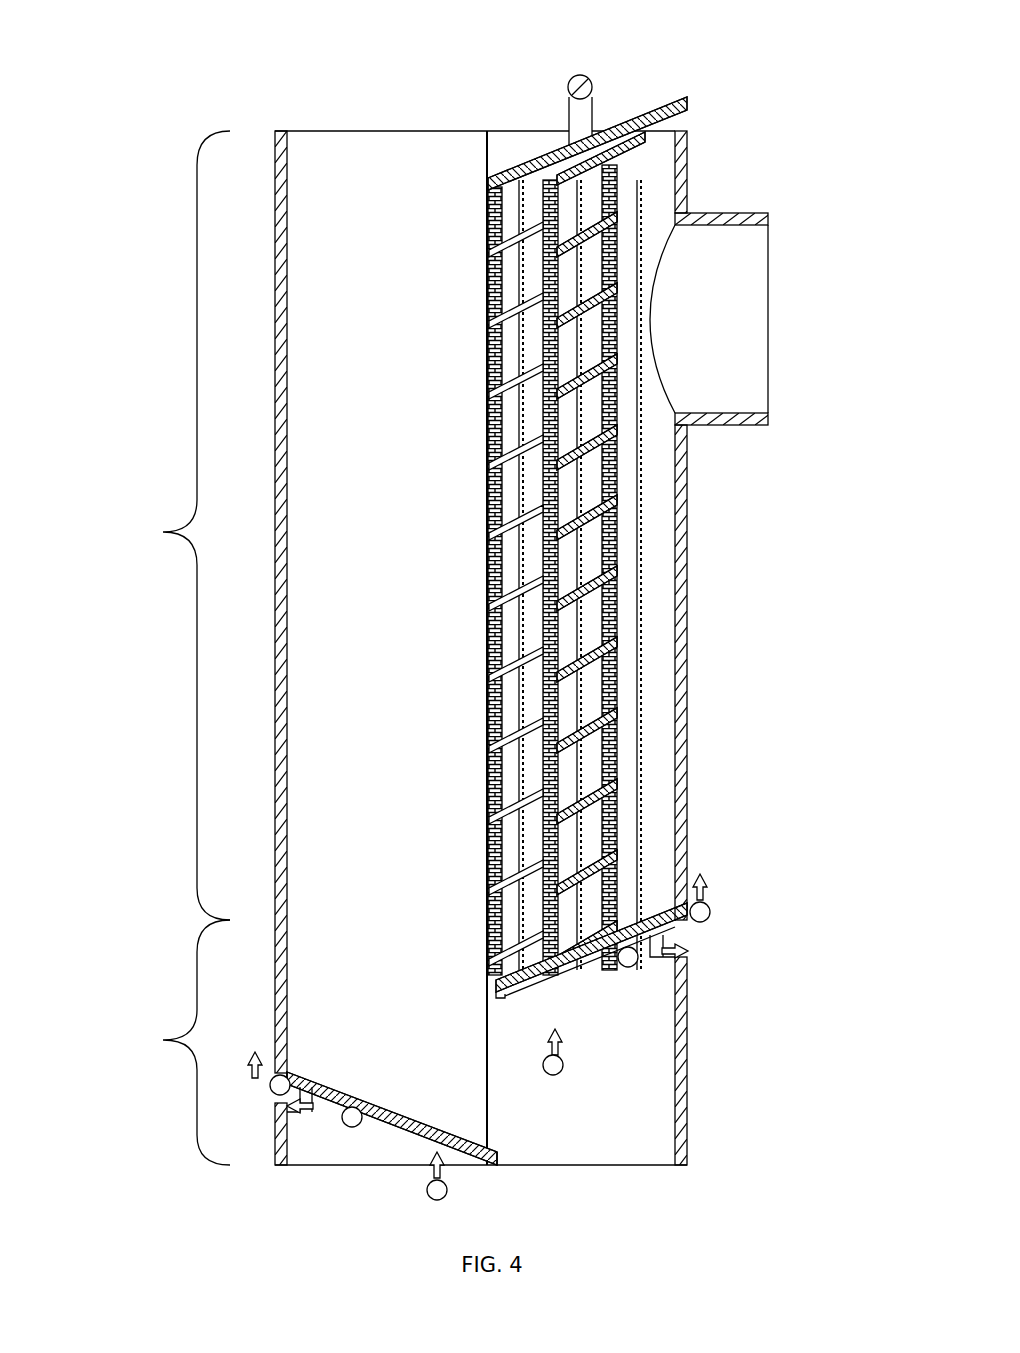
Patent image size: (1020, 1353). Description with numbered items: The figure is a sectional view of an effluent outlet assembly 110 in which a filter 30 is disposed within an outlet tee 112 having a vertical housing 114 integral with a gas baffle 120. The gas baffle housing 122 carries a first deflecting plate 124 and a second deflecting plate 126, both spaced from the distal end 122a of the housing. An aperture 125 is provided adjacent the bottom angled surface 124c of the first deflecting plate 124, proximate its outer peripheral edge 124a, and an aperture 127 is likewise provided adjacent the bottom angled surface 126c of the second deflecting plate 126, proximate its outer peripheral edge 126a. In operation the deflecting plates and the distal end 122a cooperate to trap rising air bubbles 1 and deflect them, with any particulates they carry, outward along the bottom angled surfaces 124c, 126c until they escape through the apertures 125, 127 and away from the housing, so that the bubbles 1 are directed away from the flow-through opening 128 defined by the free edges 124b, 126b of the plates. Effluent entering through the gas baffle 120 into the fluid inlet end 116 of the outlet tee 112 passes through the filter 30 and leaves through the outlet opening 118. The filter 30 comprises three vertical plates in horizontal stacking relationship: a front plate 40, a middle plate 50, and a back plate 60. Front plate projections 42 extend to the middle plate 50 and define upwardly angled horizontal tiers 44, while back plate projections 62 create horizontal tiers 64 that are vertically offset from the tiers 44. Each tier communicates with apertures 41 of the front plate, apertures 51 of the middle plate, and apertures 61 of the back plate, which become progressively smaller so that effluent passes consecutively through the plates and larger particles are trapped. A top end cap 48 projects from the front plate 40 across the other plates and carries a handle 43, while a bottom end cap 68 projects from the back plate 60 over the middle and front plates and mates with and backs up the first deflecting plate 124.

The air bubbles 1 is at (712, 913).
The filter 30 is at (667, 92).
The front plate 40 is at (432, 536).
The apertures of front plate 41 is at (497, 628).
The front plate projections 42 is at (497, 242).
The handle 43 is at (575, 76).
The horizontal tier 44 is at (468, 287).
The top end cap 48 is at (530, 165).
The middle plate 50 is at (502, 528).
The apertures of middle plate 51 is at (553, 700).
The back plate 60 is at (656, 509).
The apertures of back plate 61 is at (640, 660).
The back plate projections 62 is at (604, 235).
The horizontal tier 64 is at (588, 270).
The bottom end cap 68 is at (652, 902).
The effluent outlet assembly 110 is at (137, 147).
The outlet tee 112 is at (175, 525).
The vertical housing 114 is at (282, 578).
The fluid inlet end 116 is at (400, 920).
The outlet opening 118 is at (735, 283).
The gas baffle 120 is at (174, 1042).
The gas baffle housing 122 is at (688, 1030).
The distal end 122a is at (688, 1168).
The first deflecting plate 124 is at (570, 935).
The outer peripheral edge 124a is at (685, 908).
The free edge 124b is at (495, 1000).
The bottom angled surface 124c is at (560, 967).
The aperture 125 is at (692, 942).
The second deflecting plate 126 is at (448, 1122).
The outer peripheral edge 126a is at (300, 1075).
The free edge 126b is at (497, 1162).
The bottom angled surface 126c is at (410, 1150).
The aperture 127 is at (280, 1092).
The flow-through opening 128 is at (515, 1127).